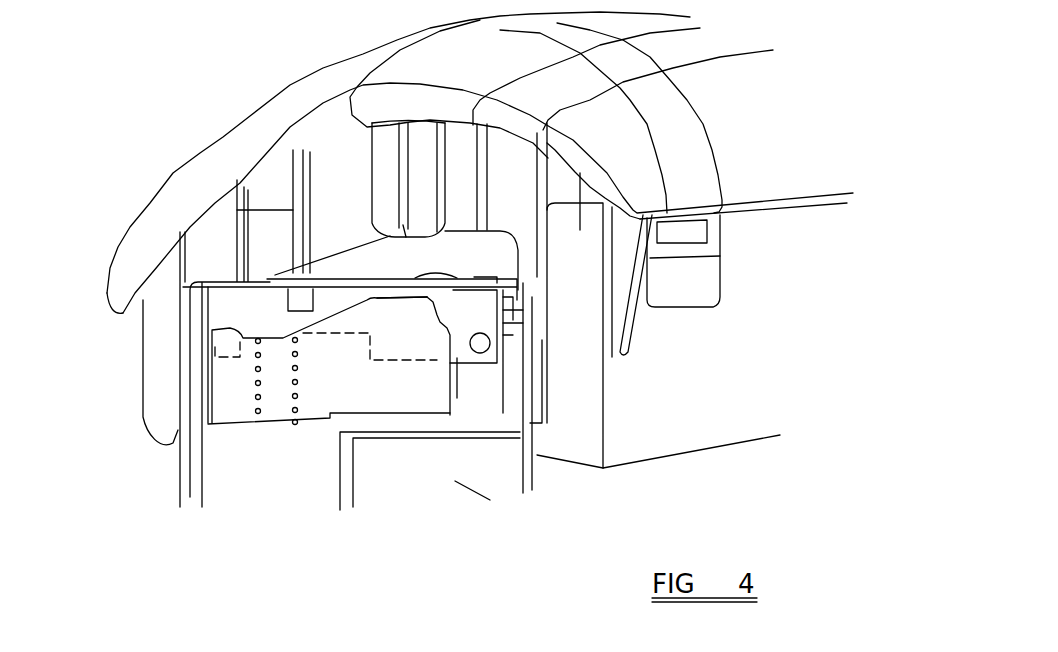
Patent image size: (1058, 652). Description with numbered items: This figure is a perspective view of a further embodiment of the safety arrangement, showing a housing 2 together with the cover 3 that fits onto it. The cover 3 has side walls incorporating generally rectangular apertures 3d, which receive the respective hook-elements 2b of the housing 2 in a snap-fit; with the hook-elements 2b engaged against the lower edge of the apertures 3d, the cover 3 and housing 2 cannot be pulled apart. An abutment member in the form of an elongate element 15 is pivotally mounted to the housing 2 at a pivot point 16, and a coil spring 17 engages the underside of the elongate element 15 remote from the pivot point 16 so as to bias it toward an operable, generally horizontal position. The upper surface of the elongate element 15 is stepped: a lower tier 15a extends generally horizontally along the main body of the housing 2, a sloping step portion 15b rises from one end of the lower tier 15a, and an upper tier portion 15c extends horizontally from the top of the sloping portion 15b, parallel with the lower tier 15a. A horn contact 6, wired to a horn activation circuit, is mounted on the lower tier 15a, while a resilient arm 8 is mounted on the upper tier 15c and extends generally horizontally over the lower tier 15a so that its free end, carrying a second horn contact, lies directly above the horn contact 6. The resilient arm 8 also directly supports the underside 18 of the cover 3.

The housing 2 is at (253, 463).
The hook-elements 2b is at (700, 290).
The cover 3 is at (713, 380).
The apertures 3d is at (713, 220).
The horn contact 6 is at (290, 305).
The resilient arm 8 is at (337, 287).
The elongate element 15 is at (460, 350).
The lower tier 15a is at (300, 322).
The sloping step portion 15b is at (370, 300).
The upper tier portion 15c is at (427, 296).
The pivot point 16 is at (480, 345).
The coil spring 17 is at (258, 388).
The underside 18 is at (237, 210).